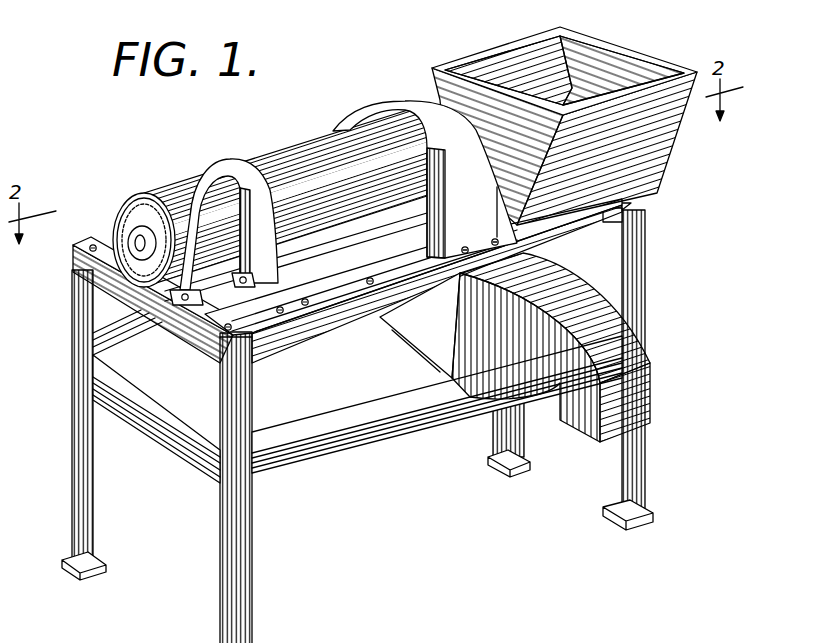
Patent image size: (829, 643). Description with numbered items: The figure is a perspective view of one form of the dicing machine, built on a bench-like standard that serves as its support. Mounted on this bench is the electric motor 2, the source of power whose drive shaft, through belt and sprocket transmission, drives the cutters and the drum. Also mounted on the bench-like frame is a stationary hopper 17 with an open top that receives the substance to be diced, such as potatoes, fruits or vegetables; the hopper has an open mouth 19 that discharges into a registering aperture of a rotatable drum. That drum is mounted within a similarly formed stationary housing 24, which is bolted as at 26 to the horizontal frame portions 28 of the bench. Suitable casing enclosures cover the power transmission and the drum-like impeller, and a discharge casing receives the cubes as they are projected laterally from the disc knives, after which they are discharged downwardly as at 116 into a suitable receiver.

The electric motor 2 is at (158, 190).
The stationary hopper 17 is at (650, 157).
The open mouth 19 is at (620, 53).
The stationary housing 24 is at (397, 102).
The bolts 26 is at (493, 237).
The horizontal frame portions 28 is at (363, 315).
The downward discharge 116 is at (640, 404).